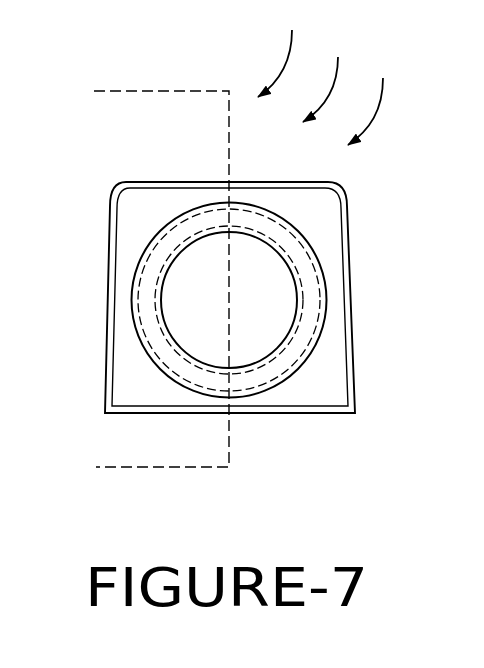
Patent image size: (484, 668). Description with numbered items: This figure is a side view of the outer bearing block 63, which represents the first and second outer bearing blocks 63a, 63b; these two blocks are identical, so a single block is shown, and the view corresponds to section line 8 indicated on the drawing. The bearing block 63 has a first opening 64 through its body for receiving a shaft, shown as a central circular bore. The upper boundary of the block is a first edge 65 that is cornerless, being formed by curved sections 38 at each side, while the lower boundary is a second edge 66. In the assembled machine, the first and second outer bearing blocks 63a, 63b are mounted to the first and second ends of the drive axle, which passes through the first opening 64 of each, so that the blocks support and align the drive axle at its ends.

The section line 8- 8 is at (80, 91).
The curved sections 38 is at (117, 190).
The bearing block 63 is at (327, 75).
The first outer bearing block 63a is at (286, 50).
The second outer bearing block 63b is at (377, 99).
The first opening 64 is at (188, 298).
The first edge 65 is at (178, 182).
The second edge 66 is at (285, 413).